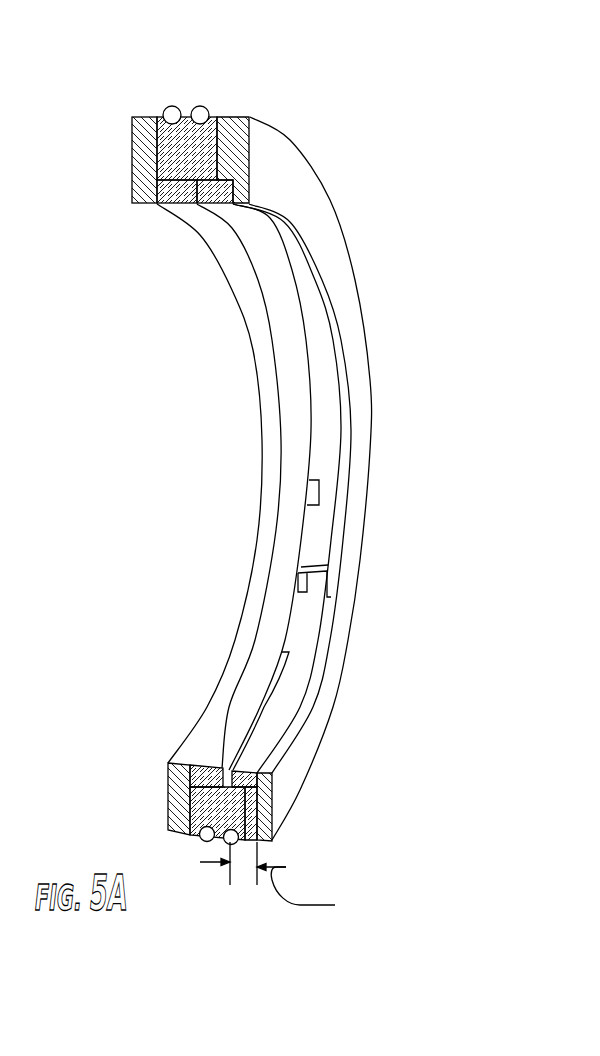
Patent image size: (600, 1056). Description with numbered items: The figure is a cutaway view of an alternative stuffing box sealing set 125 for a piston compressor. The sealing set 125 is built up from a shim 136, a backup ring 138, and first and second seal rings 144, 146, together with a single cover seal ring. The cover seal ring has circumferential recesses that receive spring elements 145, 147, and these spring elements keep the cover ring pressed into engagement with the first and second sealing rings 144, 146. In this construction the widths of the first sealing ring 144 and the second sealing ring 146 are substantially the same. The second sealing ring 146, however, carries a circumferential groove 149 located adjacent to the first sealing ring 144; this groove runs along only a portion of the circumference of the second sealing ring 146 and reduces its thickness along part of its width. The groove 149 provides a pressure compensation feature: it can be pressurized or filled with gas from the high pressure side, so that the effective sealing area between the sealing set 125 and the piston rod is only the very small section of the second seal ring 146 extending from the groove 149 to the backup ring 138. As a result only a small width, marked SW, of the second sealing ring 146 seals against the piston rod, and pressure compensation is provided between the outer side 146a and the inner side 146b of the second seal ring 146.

The sealing set 125 is at (404, 95).
The shim 136 is at (140, 160).
The backup ring 138 is at (273, 130).
The first sealing ring 144 is at (228, 735).
The spring element 145 is at (172, 106).
The second sealing ring 146 is at (258, 752).
The outer side of second seal ring 146a is at (267, 782).
The inner side of second seal ring 146b is at (223, 786).
The spring element 147 is at (202, 106).
The circumferential groove 149 is at (281, 680).